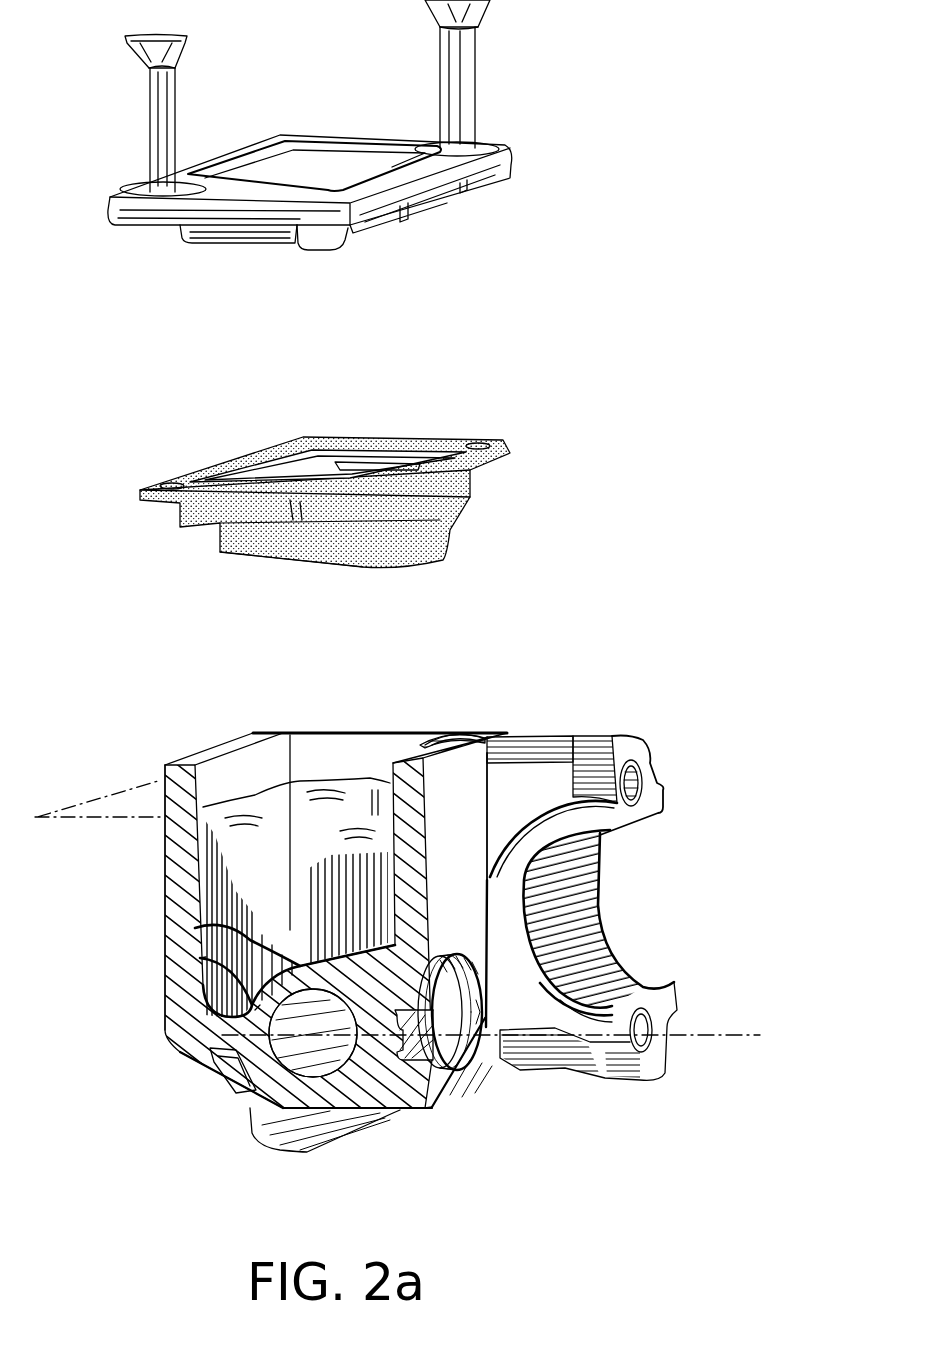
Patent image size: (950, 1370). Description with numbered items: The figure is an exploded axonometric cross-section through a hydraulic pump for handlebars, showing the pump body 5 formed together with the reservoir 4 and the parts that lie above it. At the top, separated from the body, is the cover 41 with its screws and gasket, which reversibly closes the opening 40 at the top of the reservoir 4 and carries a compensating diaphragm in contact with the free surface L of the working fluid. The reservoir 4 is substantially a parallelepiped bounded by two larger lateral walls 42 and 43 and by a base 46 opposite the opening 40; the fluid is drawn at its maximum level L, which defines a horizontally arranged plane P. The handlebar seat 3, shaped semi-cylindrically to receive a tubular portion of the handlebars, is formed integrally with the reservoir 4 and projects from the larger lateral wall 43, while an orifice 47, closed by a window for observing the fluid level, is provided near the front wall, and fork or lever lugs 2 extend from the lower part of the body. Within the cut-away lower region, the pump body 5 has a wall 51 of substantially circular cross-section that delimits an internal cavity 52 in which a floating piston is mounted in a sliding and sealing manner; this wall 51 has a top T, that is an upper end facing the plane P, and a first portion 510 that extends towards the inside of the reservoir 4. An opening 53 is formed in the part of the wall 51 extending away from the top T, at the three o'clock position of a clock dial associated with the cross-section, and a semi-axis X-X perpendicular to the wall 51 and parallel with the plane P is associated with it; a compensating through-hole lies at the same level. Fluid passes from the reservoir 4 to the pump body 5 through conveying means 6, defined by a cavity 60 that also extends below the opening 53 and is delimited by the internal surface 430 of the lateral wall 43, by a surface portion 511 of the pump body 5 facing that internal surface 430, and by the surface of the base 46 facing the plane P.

The fork or lever lugs 2 is at (255, 1140).
The handlebar seat 3 is at (663, 800).
The reservoir 4 is at (405, 897).
The pump body 5 is at (228, 1055).
The conveying means 6 is at (376, 955).
The opening 40 is at (267, 716).
The cover 41 is at (557, 133).
The larger lateral wall 42 is at (170, 925).
The larger lateral wall 43 is at (567, 858).
The base 46 is at (383, 1122).
The orifice 47 is at (512, 1068).
The wall 51 is at (253, 1100).
The internal cavity 52 is at (290, 1040).
The opening 53 is at (378, 1080).
The cavity 60 is at (441, 1072).
The internal surface 430 is at (470, 800).
The first portion 510 is at (255, 1010).
The surface portion 511 is at (195, 928).
The free surface L is at (340, 772).
The plane P is at (85, 800).
The top T is at (200, 958).
The semi-axis X-X is at (500, 1015).